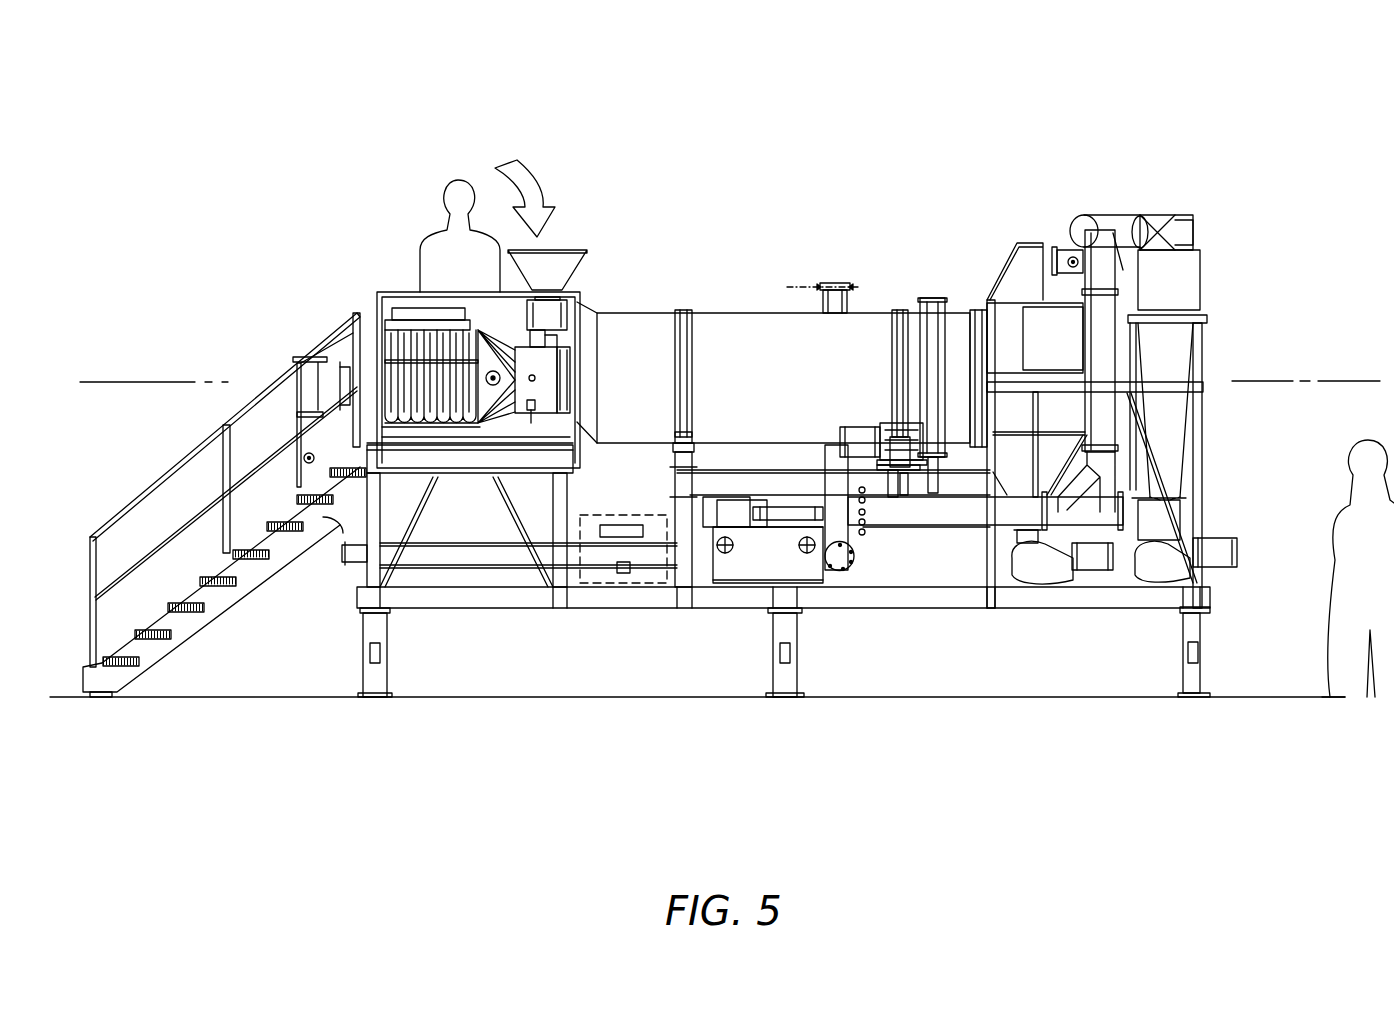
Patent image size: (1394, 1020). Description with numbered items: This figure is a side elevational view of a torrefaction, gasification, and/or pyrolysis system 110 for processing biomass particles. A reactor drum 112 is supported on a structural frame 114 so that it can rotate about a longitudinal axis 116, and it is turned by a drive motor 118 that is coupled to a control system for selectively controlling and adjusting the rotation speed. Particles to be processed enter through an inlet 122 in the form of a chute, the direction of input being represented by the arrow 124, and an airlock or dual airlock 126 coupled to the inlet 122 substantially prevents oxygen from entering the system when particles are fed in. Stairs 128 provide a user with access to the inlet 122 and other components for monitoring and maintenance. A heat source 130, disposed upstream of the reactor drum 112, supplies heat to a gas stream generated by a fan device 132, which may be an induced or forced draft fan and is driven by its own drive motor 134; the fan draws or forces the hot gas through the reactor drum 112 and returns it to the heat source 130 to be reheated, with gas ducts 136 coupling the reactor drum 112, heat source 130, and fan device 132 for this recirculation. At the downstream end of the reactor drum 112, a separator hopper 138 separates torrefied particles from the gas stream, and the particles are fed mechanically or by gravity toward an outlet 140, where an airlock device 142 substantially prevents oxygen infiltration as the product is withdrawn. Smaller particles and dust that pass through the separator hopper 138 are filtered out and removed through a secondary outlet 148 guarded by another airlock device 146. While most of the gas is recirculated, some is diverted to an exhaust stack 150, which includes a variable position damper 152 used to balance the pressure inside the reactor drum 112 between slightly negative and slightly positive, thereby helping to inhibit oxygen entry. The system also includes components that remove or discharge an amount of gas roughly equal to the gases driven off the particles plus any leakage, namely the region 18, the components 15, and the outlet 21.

The torrefaction, gasification, and/or pyrolysis system 110 is at (835, 107).
The reactor drum 112 is at (762, 337).
The structural frame 114 is at (518, 600).
The longitudinal axis 116 is at (1265, 380).
The drive motor 118 is at (863, 443).
The inlet 122 is at (565, 263).
The arrow 124 is at (538, 180).
The airlock or dual airlock 126 is at (593, 297).
The stairs 128 is at (153, 487).
The heat source 130 is at (405, 323).
The fan device 132 is at (837, 547).
The drive motor 134 is at (732, 510).
The gas ducts 136 is at (323, 550).
The separator hopper 138 is at (1032, 255).
The outlet 140 is at (1012, 600).
The airlock device 142 is at (1060, 563).
The airlock device 146 is at (1173, 563).
The secondary outlet 148 is at (1137, 597).
The exhaust stack 150 is at (845, 303).
The variable position damper 152 is at (840, 282).
The components 15 is at (600, 522).
The region 18 is at (638, 522).
The outlet 21 is at (630, 573).